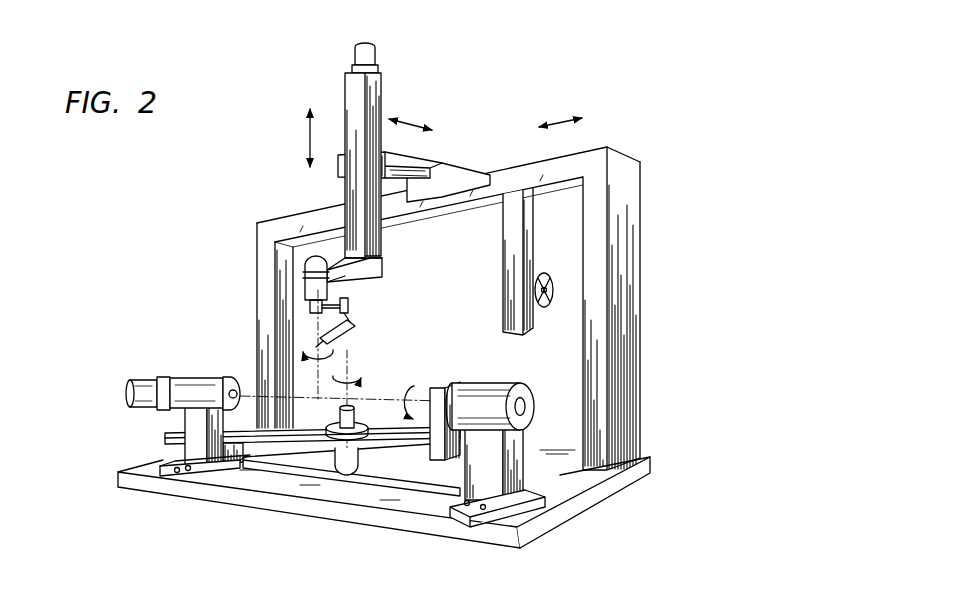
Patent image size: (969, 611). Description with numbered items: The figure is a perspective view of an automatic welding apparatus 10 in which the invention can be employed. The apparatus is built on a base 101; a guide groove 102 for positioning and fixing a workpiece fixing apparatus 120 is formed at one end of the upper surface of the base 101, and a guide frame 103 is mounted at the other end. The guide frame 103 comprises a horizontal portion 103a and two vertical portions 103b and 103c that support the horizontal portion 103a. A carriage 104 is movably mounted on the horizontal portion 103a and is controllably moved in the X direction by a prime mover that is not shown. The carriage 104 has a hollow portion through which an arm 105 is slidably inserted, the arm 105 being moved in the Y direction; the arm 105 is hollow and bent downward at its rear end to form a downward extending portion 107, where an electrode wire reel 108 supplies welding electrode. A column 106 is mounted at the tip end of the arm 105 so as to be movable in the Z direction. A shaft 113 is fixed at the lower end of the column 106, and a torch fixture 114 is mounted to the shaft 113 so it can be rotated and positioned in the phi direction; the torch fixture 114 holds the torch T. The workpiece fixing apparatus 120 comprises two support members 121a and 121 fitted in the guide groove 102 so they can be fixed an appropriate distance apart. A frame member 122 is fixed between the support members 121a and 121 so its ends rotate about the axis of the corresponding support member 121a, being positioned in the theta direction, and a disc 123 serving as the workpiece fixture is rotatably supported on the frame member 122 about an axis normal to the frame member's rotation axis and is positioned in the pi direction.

The automatic welding apparatus 10 is at (207, 258).
The base 101 is at (567, 488).
The guide groove 102 is at (410, 484).
The guide frame 103 is at (456, 267).
The horizontal portion 103a is at (583, 148).
The vertical portion 103b is at (637, 188).
The vertical portion 103c is at (257, 298).
The carriage 104 is at (429, 156).
The arm 105 is at (413, 170).
The column 106 is at (379, 246).
The downward extending portion 107 is at (510, 238).
The electrode wire reel 108 is at (542, 275).
The shaft 113 is at (328, 298).
The torch fixture 114 is at (358, 312).
The torch T is at (358, 327).
The workpiece fixing apparatus 120 is at (171, 402).
The support member 121 is at (190, 436).
The support member 121a is at (518, 438).
The frame member 122 is at (277, 442).
The disc 123 is at (334, 448).